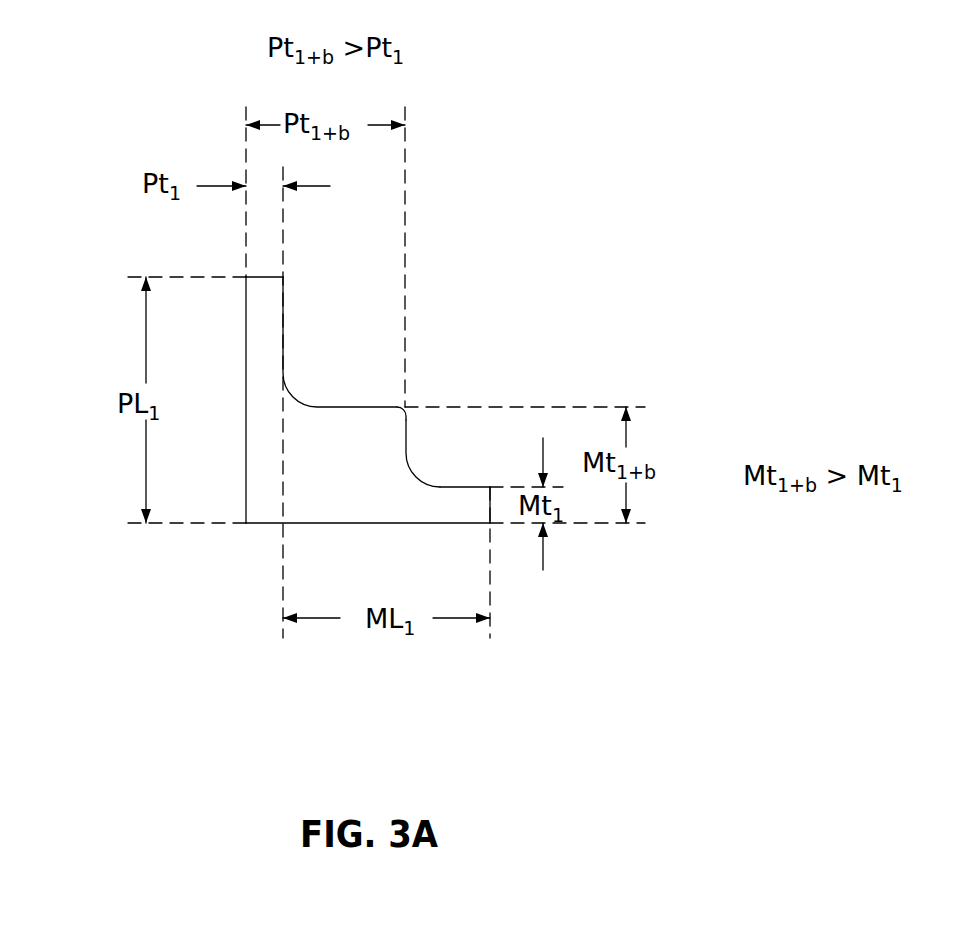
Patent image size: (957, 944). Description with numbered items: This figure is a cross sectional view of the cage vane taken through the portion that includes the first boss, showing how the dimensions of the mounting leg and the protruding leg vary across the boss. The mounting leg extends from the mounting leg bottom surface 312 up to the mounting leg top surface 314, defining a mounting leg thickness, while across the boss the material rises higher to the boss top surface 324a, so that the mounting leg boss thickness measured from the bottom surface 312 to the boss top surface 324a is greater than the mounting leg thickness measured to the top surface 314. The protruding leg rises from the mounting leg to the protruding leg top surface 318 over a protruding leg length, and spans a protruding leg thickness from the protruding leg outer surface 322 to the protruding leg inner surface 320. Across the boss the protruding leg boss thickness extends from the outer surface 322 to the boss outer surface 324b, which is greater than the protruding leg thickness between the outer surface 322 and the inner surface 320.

The mounting leg bottom surface 312 is at (333, 523).
The mounting leg top surface 314 is at (467, 487).
The protruding leg top surface 318 is at (265, 277).
The protruding leg inner surface 320 is at (283, 323).
The protruding leg outer surface 322 is at (246, 430).
The boss top surface 324a is at (357, 407).
The boss outer surface 324b is at (408, 435).